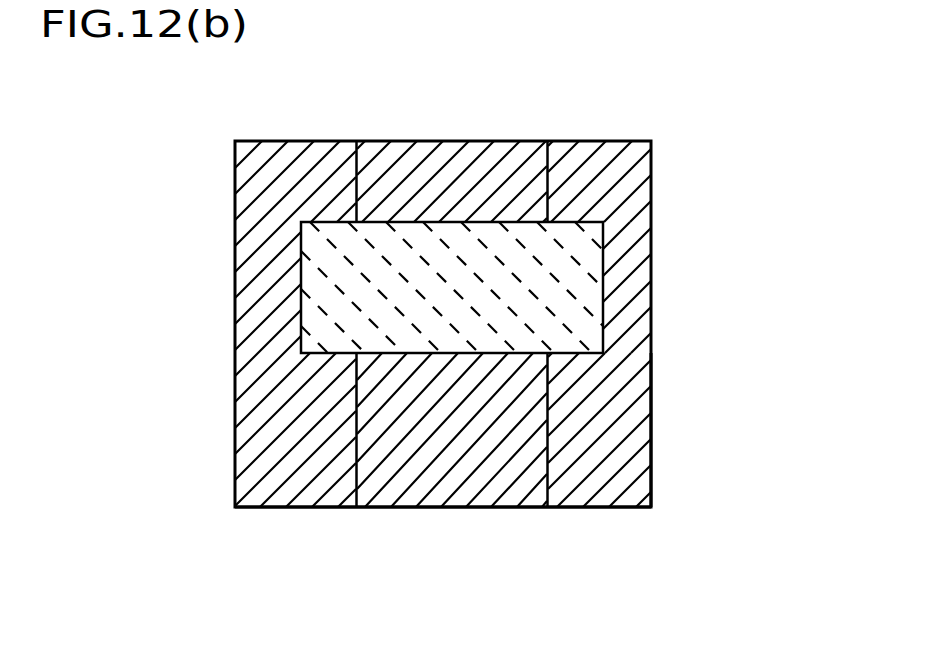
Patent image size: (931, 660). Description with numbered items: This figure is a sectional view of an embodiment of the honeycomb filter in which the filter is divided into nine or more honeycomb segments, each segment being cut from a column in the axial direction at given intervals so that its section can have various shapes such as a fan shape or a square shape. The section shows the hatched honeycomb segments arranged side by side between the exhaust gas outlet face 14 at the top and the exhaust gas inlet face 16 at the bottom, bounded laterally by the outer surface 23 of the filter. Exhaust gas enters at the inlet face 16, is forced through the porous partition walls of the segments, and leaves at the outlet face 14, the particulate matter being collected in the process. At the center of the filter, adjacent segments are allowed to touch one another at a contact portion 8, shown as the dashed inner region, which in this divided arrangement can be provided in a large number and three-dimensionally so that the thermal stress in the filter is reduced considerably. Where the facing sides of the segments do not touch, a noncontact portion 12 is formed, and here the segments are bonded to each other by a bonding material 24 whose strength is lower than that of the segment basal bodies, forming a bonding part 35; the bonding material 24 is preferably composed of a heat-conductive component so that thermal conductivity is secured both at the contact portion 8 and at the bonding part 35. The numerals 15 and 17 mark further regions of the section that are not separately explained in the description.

The contact portion 8 is at (312, 235).
The noncontact portion 12 is at (575, 475).
The exhaust gas outlet face 14 is at (458, 141).
The upper right portion 15 is at (620, 142).
The exhaust gas inlet face 16 is at (468, 508).
The lower left portion 17 is at (376, 508).
The outer surface 23 is at (236, 375).
The bonding material 24 is at (652, 454).
The bonding part 35 is at (640, 277).